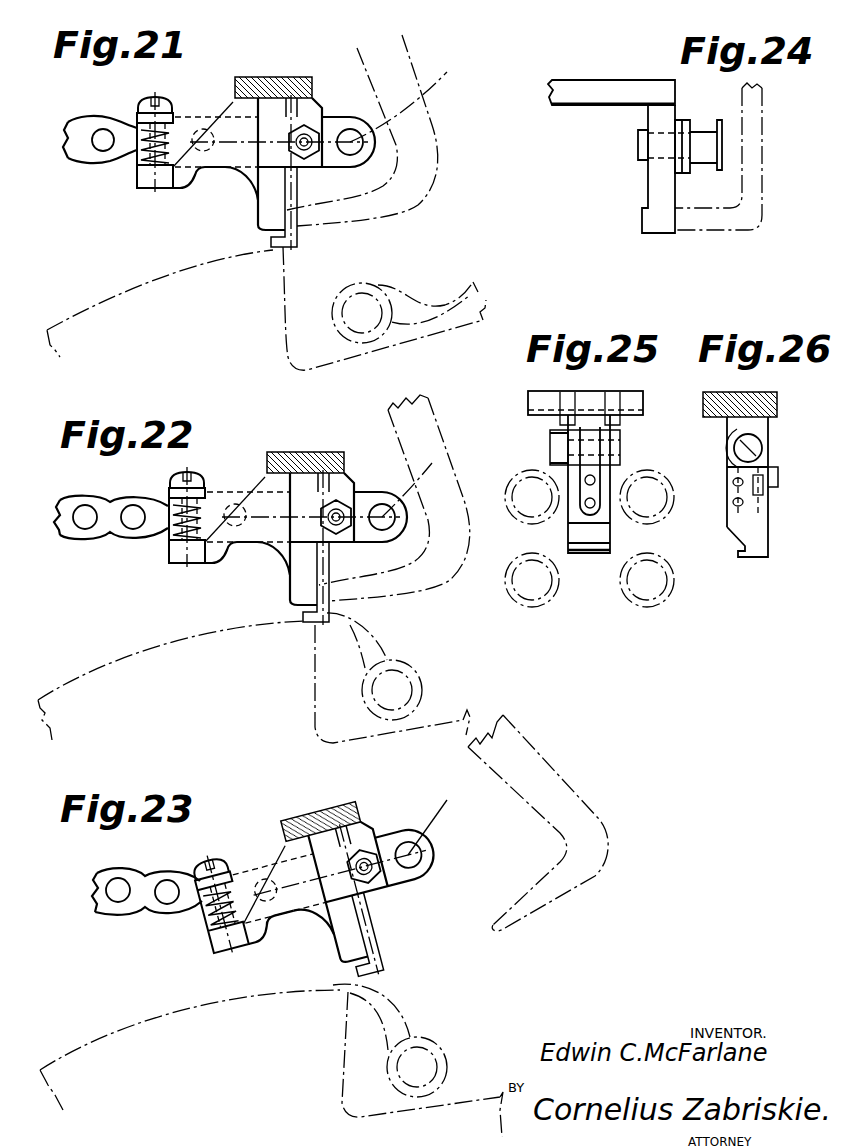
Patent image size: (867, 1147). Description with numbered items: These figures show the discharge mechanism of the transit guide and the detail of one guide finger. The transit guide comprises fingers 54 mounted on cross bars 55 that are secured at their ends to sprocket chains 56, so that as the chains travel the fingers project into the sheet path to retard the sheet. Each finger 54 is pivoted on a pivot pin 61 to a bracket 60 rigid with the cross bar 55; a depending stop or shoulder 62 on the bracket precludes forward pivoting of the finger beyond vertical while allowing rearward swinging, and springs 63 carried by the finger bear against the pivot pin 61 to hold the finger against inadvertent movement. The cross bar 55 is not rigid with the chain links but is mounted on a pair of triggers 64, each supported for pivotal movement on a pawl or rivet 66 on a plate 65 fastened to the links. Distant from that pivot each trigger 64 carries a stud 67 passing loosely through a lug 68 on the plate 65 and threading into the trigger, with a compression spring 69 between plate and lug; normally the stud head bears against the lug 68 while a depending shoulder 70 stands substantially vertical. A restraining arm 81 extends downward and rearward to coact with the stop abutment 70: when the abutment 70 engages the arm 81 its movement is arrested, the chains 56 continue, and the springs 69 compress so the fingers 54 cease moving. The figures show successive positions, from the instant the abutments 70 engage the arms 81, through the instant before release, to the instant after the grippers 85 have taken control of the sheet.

In FIG. 21, the finger 54 is at (297, 243).
In FIG. 22, the finger 54 is at (329, 607).
In FIG. 23, the finger 54 is at (377, 952).
In FIG. 25, the finger 54 is at (590, 555).
In FIG. 26, the finger 54 is at (765, 527).
In FIG. 21, the cross bar 55 is at (290, 64).
In FIG. 22, the cross bar 55 is at (312, 452).
In FIG. 23, the cross bar 55 is at (336, 810).
In FIG. 24, the cross bar 55 is at (611, 92).
In FIG. 25, the cross bar 55 is at (650, 378).
In FIG. 26, the cross bar 55 is at (770, 392).
In FIG. 21, the sprocket chain 56 is at (100, 152).
In FIG. 22, the sprocket chain 56 is at (133, 530).
In FIG. 23, the sprocket chain 56 is at (166, 905).
In FIG. 24, the sprocket chain 56 is at (722, 145).
In FIG. 26, the bracket 60 is at (770, 427).
In FIG. 26, the pivot pin 61 is at (732, 448).
In FIG. 26, the stop or shoulder 62 is at (778, 478).
In FIG. 26, the springs 63 is at (733, 500).
In FIG. 21, the trigger 64 is at (318, 104).
In FIG. 22, the trigger 64 is at (343, 480).
In FIG. 23, the trigger 64 is at (366, 834).
In FIG. 21, the plate 65 is at (345, 122).
In FIG. 22, the plate 65 is at (381, 494).
In FIG. 23, the plate 65 is at (416, 832).
In FIG. 24, the plate 65 is at (677, 117).
In FIG. 21, the pawl or rivet 66 is at (290, 146).
In FIG. 22, the pawl or rivet 66 is at (347, 530).
In FIG. 23, the pawl or rivet 66 is at (350, 867).
In FIG. 21, the stud 67 is at (170, 101).
In FIG. 22, the stud 67 is at (202, 478).
In FIG. 23, the stud 67 is at (216, 866).
In FIG. 21, the lug 68 is at (137, 114).
In FIG. 22, the lug 68 is at (168, 490).
In FIG. 23, the lug 68 is at (207, 876).
In FIG. 21, the compression spring 69 is at (140, 160).
In FIG. 22, the compression spring 69 is at (172, 540).
In FIG. 23, the compression spring 69 is at (210, 905).
In FIG. 21, the depending shoulder or stop abutment 70 is at (270, 200).
In FIG. 22, the depending shoulder or stop abutment 70 is at (308, 575).
In FIG. 23, the depending shoulder or stop abutment 70 is at (355, 933).
In FIG. 21, the restraining arm 81 is at (440, 150).
In FIG. 22, the restraining arm 81 is at (449, 470).
In FIG. 23, the restraining arm 81 is at (560, 772).
In FIG. 24, the restraining arm 81 is at (755, 190).
In FIG. 21, the grippers 85 is at (400, 307).
In FIG. 22, the grippers 85 is at (372, 650).
In FIG. 23, the grippers 85 is at (400, 1018).